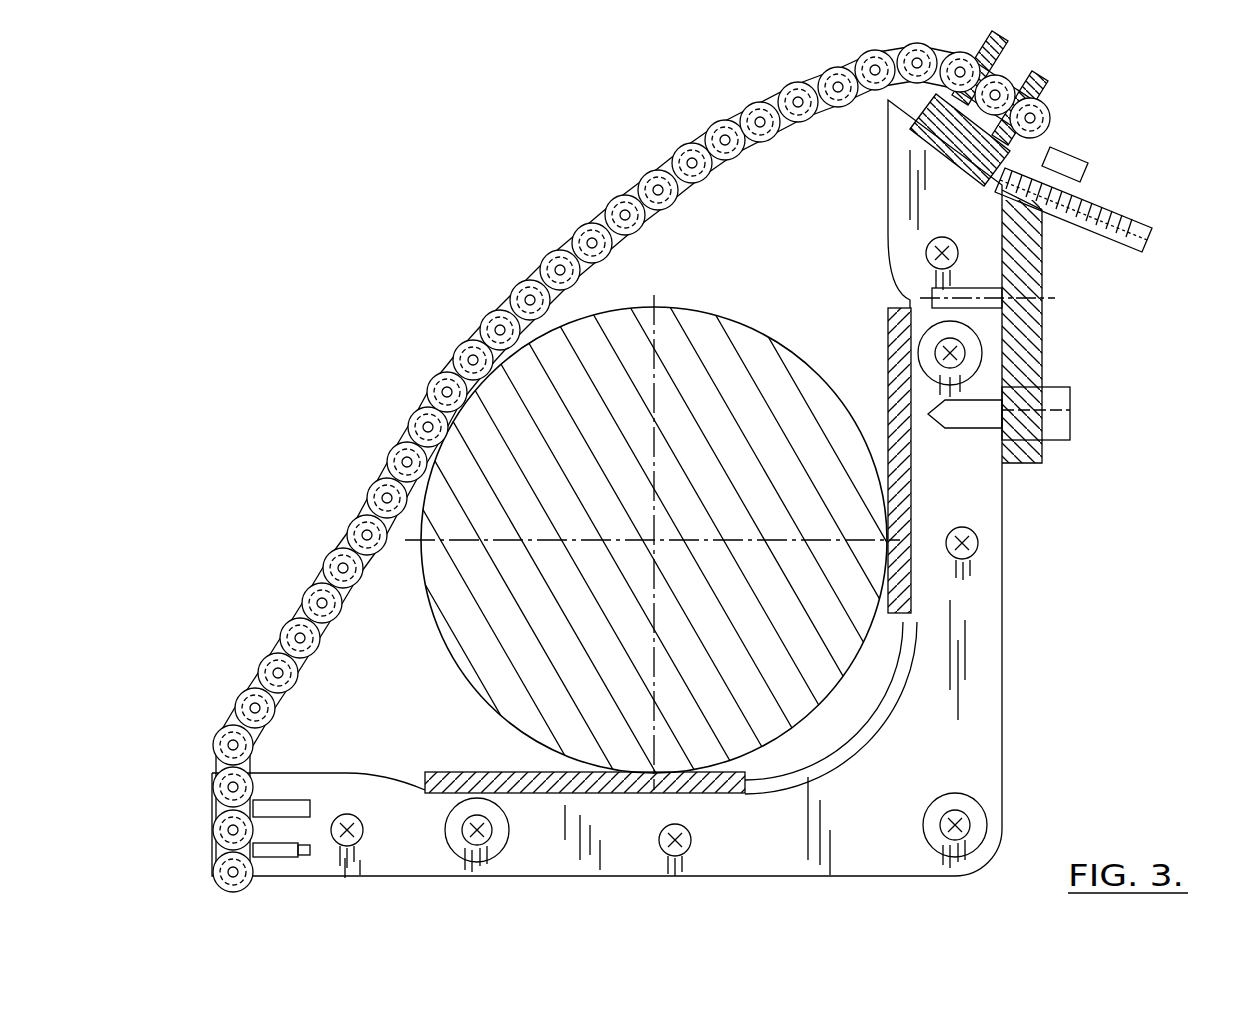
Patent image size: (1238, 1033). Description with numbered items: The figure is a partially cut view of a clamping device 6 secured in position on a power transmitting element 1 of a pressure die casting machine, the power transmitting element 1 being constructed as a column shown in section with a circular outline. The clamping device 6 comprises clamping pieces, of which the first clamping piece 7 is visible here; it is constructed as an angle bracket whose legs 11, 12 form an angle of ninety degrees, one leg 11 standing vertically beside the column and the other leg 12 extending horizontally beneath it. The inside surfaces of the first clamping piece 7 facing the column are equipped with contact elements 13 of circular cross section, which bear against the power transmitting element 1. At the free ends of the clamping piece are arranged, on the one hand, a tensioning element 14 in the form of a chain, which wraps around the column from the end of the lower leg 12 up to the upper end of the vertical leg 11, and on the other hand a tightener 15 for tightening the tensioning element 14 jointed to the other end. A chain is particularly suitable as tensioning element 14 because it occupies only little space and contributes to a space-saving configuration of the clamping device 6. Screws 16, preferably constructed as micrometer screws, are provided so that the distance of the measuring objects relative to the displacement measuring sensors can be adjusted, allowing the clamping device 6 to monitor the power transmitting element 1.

The power transmitting element 1 is at (597, 596).
The clamping device 6 is at (682, 461).
The first clamping piece 7 is at (682, 461).
The leg 11 is at (982, 620).
The leg 12 is at (630, 845).
The contact element 13 is at (496, 768).
The tensioning element 14 is at (632, 198).
The tightener 15 is at (1082, 72).
The screw 16 is at (490, 840).